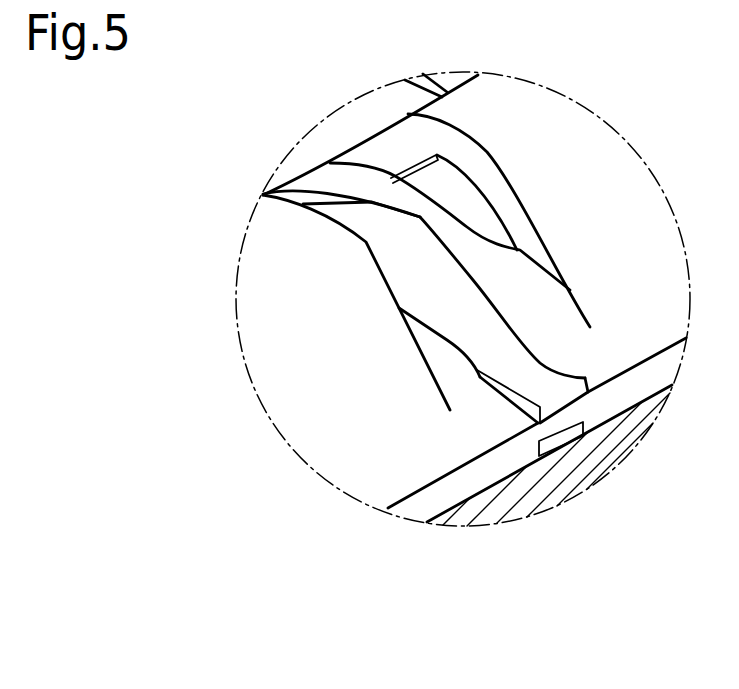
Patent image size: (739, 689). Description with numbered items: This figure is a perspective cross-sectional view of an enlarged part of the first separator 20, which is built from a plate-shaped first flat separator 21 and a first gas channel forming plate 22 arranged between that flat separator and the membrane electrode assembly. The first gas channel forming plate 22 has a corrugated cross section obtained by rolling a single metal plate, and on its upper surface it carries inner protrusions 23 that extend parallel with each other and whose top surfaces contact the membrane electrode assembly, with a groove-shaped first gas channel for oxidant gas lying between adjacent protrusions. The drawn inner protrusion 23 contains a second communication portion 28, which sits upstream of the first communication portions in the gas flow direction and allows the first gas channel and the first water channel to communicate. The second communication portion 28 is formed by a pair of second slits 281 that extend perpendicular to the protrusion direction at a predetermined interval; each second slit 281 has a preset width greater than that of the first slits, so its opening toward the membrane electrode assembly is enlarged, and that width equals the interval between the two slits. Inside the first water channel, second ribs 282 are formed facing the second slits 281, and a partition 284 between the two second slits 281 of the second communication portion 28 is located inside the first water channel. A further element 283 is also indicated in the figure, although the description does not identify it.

The first separator 20 is at (465, 608).
The first flat separator 21 is at (520, 504).
The first gas channel forming plate 22 is at (363, 468).
The inner protrusion 23 is at (263, 223).
The second communication portion 28 is at (523, 170).
The second slit 281 is at (392, 287).
The second rib 282 is at (433, 350).
The clip 283 is at (560, 436).
The partition 284 is at (373, 215).